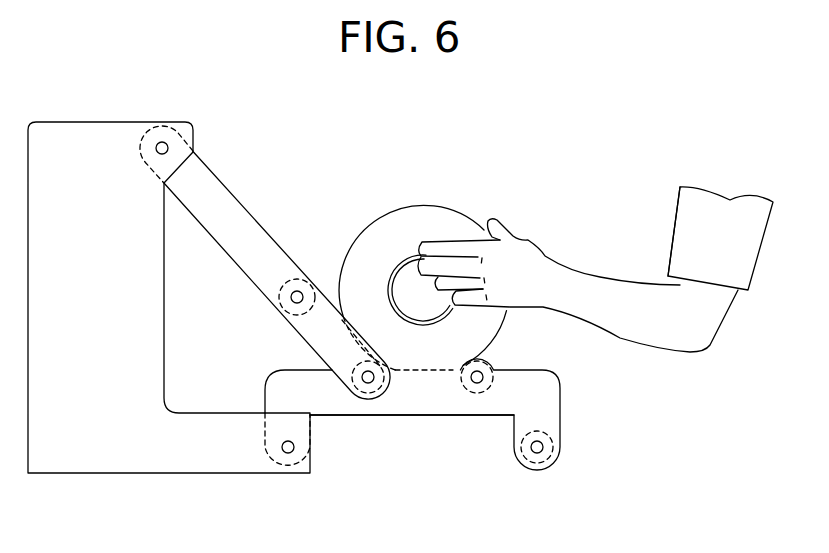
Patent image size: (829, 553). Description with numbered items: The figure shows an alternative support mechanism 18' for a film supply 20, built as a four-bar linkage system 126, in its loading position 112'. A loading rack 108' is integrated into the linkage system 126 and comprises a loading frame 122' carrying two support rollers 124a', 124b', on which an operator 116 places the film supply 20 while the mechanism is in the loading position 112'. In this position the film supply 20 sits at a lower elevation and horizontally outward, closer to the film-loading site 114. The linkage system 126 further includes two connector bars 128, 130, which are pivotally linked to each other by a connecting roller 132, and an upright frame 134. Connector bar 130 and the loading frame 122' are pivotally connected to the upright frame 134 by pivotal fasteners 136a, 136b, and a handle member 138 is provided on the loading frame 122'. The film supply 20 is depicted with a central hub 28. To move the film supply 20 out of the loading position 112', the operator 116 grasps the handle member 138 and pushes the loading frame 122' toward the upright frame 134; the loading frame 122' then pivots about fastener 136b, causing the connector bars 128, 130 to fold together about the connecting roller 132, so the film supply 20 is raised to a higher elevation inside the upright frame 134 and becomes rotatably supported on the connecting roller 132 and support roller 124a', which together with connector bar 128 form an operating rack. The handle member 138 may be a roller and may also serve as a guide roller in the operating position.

The alternative support mechanism 18' is at (332, 278).
The film supply 20 is at (451, 208).
The hub 28 is at (412, 216).
The loading rack 108' is at (412, 444).
The loading position 112' is at (596, 207).
The film-loading site 114 is at (715, 173).
The operator 116 is at (670, 229).
The loading frame 122' is at (451, 432).
The support roller 124a' is at (366, 423).
The support roller 124b' is at (516, 362).
The 4-bar linkage system 126 is at (215, 176).
The connector bar 128 is at (323, 312).
The connector bar 130 is at (302, 278).
The connecting roller 132 is at (297, 291).
The upright frame 134 is at (121, 281).
The pivotal fastener 136a is at (162, 142).
The pivotal fastener 136b is at (288, 453).
The handle member 138 is at (537, 453).